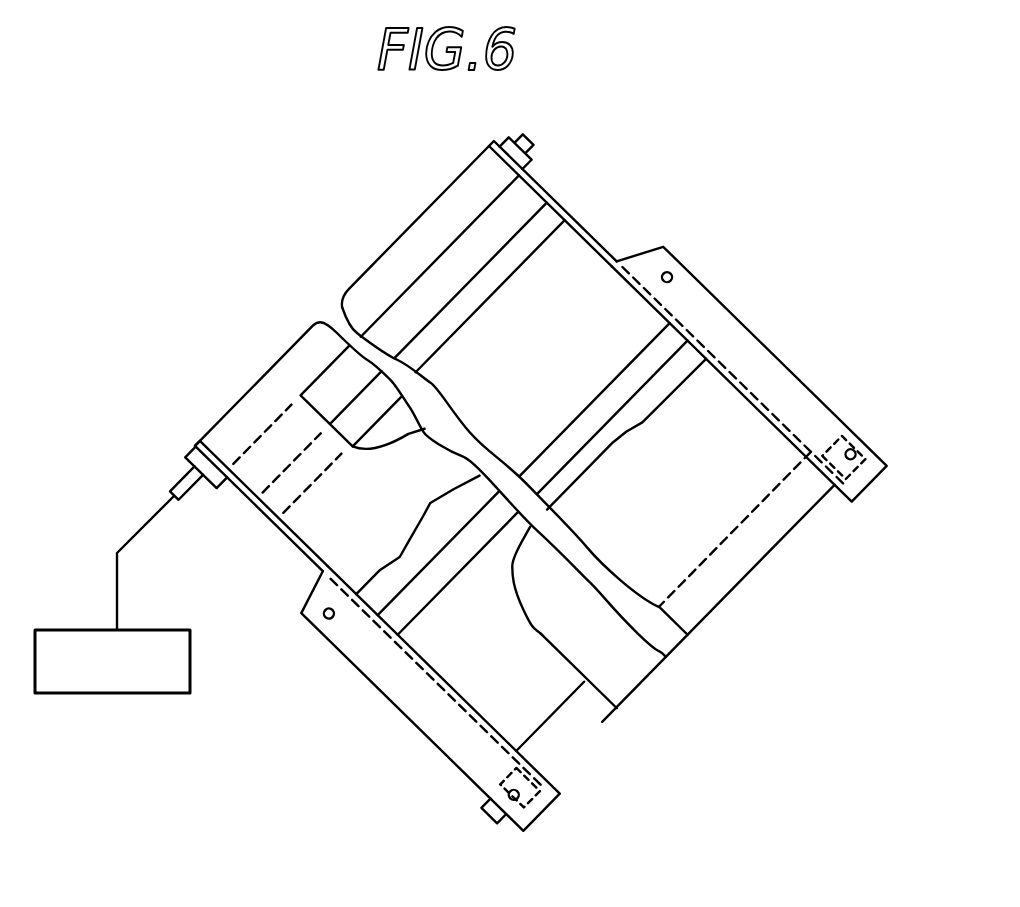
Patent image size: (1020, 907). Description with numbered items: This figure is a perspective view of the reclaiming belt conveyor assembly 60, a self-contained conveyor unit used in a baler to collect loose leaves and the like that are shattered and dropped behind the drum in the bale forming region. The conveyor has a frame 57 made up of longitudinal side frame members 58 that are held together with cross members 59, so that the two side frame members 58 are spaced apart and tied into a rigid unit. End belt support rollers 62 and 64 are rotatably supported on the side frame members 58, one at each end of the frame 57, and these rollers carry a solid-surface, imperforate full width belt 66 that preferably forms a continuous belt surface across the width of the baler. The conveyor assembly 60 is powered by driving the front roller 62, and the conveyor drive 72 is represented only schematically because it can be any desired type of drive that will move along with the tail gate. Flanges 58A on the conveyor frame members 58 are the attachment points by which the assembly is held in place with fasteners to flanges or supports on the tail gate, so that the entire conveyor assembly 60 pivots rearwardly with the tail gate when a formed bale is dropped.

The reclaiming belt conveyor assembly 60 is at (630, 212).
The longitudinal side frame member 58 is at (612, 252).
The flange 58A is at (753, 357).
The frame 57 is at (187, 453).
The conveyor drive 72 is at (106, 694).
The front roller 62 is at (308, 350).
The end belt support roller 64 is at (570, 732).
The full width belt 66 is at (240, 405).
The cross member 59 is at (395, 403).